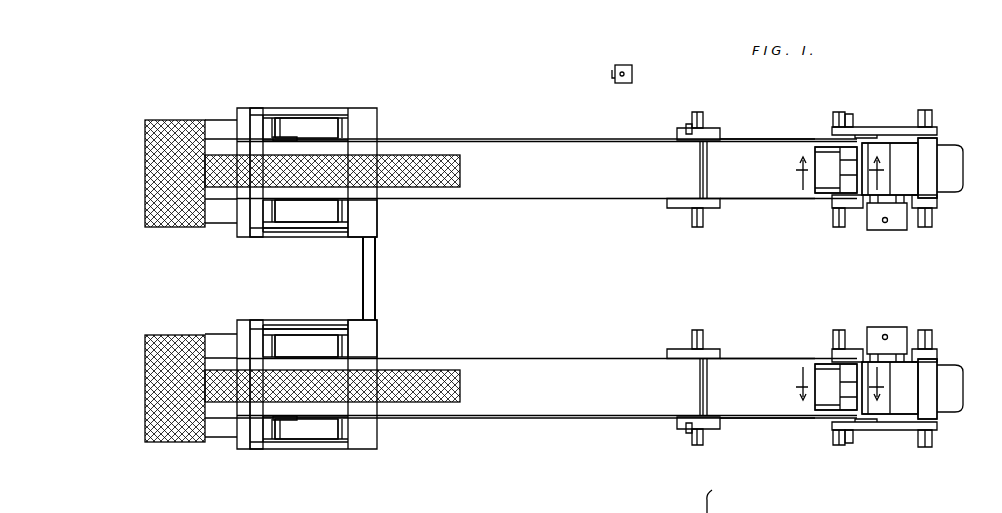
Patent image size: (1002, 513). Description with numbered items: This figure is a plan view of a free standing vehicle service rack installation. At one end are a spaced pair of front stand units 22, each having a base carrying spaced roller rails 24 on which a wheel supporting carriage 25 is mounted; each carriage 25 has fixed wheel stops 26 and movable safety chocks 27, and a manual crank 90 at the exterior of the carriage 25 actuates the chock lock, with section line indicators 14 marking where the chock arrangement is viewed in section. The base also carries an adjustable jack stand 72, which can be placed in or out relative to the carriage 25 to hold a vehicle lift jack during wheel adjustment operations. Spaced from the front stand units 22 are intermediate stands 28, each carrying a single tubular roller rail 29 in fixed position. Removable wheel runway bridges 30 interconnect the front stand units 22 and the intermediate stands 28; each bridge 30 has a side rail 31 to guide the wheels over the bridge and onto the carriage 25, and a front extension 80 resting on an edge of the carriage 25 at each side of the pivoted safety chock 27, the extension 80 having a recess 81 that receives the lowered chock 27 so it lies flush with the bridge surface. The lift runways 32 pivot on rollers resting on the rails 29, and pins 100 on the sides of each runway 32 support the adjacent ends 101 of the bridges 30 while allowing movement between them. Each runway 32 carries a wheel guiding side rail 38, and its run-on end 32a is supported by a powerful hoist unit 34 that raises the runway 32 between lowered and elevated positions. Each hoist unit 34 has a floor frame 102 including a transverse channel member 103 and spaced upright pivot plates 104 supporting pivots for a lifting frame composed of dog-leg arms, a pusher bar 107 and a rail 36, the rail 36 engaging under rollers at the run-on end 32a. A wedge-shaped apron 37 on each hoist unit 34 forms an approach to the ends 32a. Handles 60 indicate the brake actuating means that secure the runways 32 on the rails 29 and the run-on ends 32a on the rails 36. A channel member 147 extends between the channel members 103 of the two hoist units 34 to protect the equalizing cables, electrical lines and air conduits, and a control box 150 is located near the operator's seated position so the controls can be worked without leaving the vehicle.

The section line 14 is at (838, 278).
The front stand units 22 is at (948, 139).
The roller rails 24 is at (848, 115).
The wheel supporting carriage 25 is at (895, 150).
The fixed wheel stops 26 is at (950, 168).
The safety chock 27 is at (818, 149).
The intermediate stands 28 is at (674, 208).
The roller rail 29 is at (704, 223).
The removable wheel runway bridge 30 is at (774, 202).
The side rail 31 is at (740, 139).
The lift runway 32 is at (520, 201).
The run-on end 32a is at (235, 148).
The hoist unit 34 is at (358, 107).
The rail 36 is at (268, 220).
The wedge-shaped apron 37 is at (168, 226).
The wheel guiding side rail 38 is at (490, 140).
The handles 60 is at (288, 136).
The adjustable jack stand 72 is at (880, 229).
The front extension 80 is at (832, 146).
The recess 81 is at (818, 194).
The manual crank 90 is at (860, 131).
The pins 100 is at (704, 206).
The adjacent ends 101 is at (700, 150).
The floor frame 102 is at (270, 100).
The transverse channel member 103 is at (366, 225).
The upright pivot plates 104 is at (340, 109).
The pusher bar 107 is at (345, 208).
The channel member 147 is at (363, 270).
The control box 150 is at (632, 72).